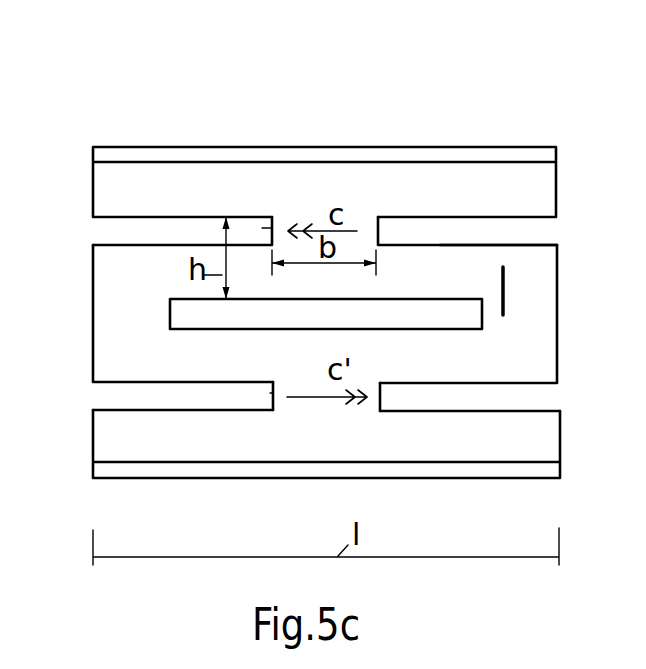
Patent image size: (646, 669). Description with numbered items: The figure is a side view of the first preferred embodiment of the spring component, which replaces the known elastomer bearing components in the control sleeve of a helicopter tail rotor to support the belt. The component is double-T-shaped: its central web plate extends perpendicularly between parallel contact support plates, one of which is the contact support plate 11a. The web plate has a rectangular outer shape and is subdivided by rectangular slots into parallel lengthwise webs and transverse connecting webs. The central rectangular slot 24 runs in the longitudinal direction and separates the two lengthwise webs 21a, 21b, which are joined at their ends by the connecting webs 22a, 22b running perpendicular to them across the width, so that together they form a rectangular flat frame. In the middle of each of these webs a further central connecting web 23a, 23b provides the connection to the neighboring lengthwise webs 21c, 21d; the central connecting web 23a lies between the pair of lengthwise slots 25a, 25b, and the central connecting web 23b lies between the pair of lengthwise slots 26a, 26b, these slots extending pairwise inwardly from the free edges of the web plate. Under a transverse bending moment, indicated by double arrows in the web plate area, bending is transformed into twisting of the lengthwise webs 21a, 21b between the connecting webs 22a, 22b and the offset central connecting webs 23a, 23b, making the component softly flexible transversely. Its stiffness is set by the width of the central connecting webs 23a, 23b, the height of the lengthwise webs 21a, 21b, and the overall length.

The contact support plate 11a is at (190, 154).
The lengthwise web 21a is at (424, 267).
The lengthwise web 21b is at (477, 370).
The lengthwise web 21c is at (437, 182).
The lengthwise web 21d is at (470, 448).
The connecting web 22a is at (142, 308).
The connecting web 22b is at (503, 267).
The central connecting web 23a is at (262, 228).
The central connecting web 23b is at (273, 393).
The central rectangular slot 24 is at (388, 310).
The lengthwise slot 25a is at (157, 233).
The lengthwise slot 25b is at (453, 235).
The lengthwise slot 26a is at (170, 394).
The lengthwise slot 26b is at (437, 398).